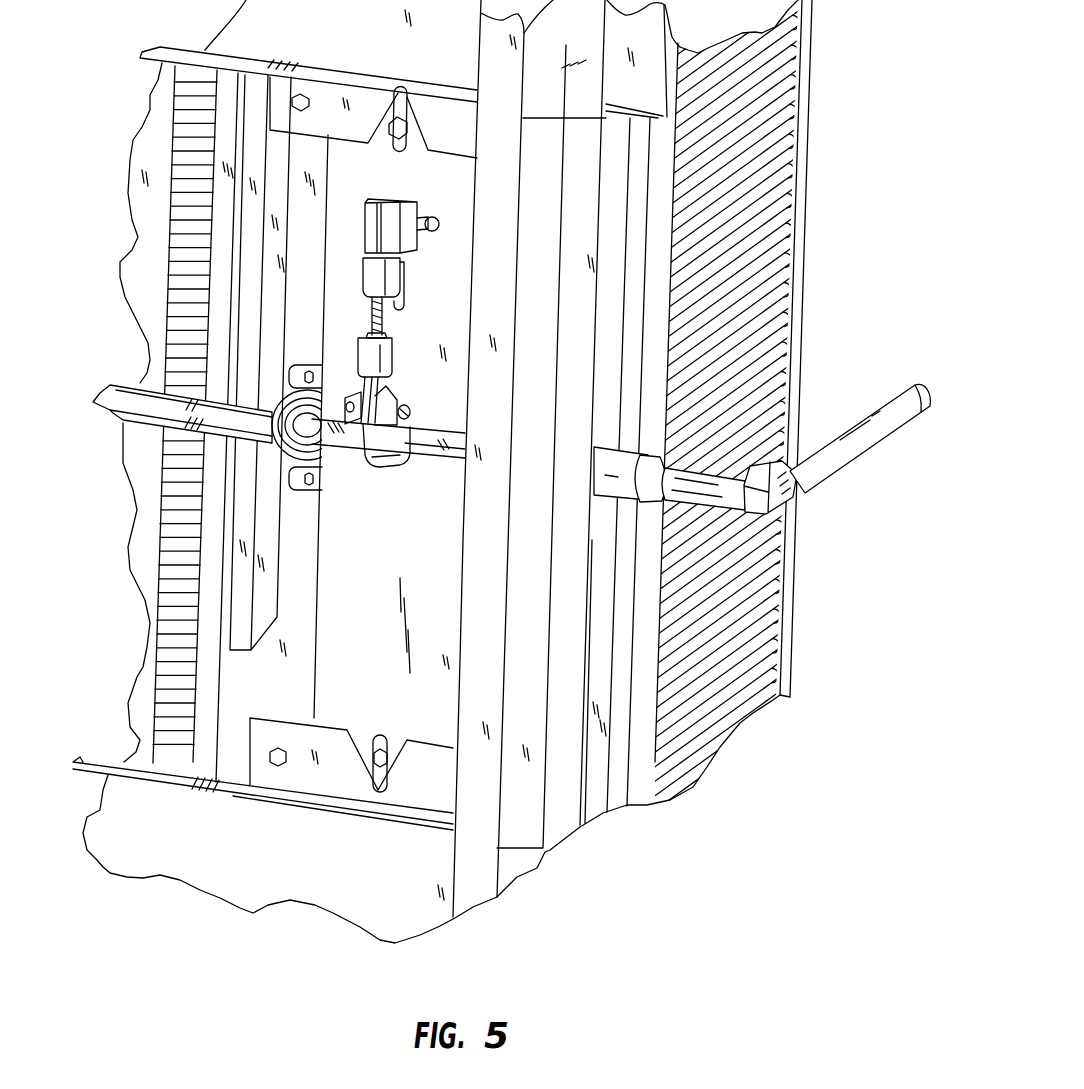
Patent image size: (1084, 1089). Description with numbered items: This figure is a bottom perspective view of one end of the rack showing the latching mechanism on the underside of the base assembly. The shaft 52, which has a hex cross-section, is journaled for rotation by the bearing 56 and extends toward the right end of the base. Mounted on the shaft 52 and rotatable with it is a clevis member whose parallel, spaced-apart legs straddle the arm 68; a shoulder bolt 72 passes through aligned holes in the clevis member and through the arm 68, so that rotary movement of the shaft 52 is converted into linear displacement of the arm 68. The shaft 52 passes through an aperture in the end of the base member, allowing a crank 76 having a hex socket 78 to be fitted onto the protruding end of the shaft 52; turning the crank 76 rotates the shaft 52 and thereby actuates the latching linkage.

The first shaft 52 is at (447, 457).
The bearing 56 is at (300, 488).
The arm 68 is at (360, 353).
The shoulder bolt 72 is at (407, 407).
The crank 76 is at (858, 440).
The hex socket 78 is at (615, 477).